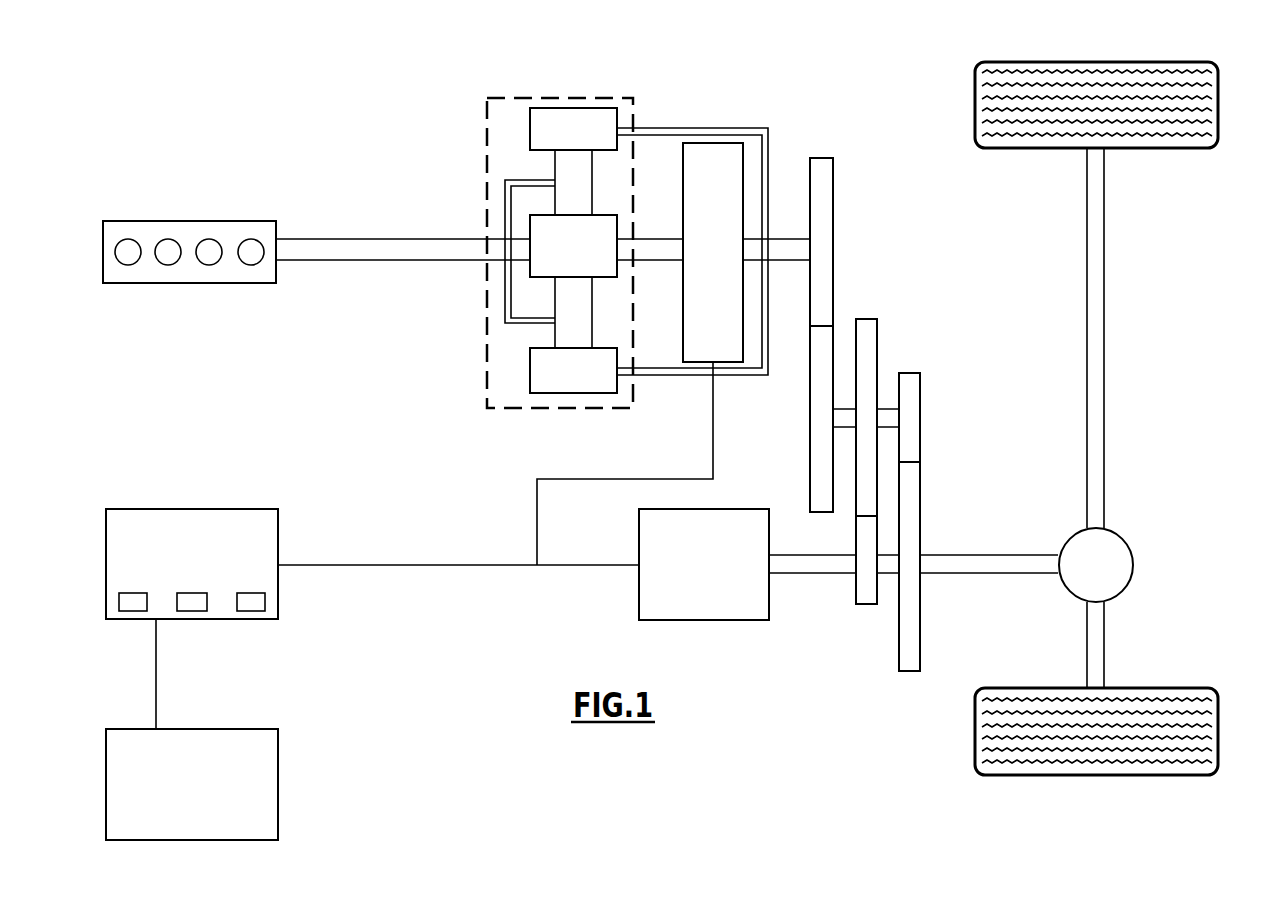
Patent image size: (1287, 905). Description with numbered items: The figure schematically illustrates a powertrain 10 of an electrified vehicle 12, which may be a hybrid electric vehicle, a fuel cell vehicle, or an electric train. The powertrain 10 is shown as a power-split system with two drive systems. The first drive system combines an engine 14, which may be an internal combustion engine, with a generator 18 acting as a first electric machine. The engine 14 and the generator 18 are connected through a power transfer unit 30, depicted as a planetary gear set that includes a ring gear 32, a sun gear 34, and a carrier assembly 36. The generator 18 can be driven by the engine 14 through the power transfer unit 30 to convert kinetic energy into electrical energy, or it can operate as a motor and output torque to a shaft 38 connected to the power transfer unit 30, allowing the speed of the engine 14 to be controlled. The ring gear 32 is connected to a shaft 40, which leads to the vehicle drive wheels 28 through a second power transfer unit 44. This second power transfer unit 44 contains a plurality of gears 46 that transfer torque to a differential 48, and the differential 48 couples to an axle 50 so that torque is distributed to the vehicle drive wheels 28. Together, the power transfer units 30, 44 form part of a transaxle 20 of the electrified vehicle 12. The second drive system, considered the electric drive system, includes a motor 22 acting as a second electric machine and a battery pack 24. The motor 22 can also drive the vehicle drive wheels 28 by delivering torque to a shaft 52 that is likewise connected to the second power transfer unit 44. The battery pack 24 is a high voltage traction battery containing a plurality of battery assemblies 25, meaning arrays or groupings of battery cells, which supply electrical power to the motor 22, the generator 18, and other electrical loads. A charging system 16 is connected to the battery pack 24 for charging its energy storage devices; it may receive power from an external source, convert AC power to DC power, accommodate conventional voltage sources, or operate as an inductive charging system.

The powertrain 10 is at (333, 124).
The electrified vehicle 12 is at (738, 54).
The engine 14 is at (120, 221).
The charging system 16 is at (278, 773).
The generator 18 is at (690, 143).
The transaxle 20 is at (798, 158).
The motor 22 is at (769, 603).
The battery pack 24 is at (122, 509).
The battery assemblies 25 is at (147, 603).
The vehicle drive wheels 28 is at (1218, 730).
The power transfer unit 30 is at (483, 368).
The ring gear 32 is at (530, 128).
The sun gear 34 is at (530, 225).
The carrier assembly 36 is at (505, 307).
The shaft 38 is at (649, 237).
The shaft 40 is at (790, 237).
The second power transfer unit 44 is at (903, 283).
The gears 46 is at (833, 288).
The differential 48 is at (1130, 585).
The axle 50 is at (1104, 328).
The shaft 52 is at (823, 573).